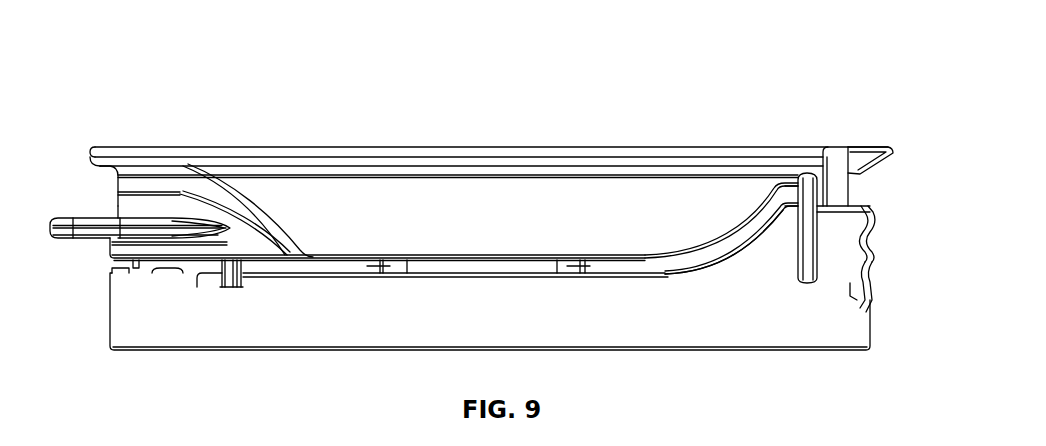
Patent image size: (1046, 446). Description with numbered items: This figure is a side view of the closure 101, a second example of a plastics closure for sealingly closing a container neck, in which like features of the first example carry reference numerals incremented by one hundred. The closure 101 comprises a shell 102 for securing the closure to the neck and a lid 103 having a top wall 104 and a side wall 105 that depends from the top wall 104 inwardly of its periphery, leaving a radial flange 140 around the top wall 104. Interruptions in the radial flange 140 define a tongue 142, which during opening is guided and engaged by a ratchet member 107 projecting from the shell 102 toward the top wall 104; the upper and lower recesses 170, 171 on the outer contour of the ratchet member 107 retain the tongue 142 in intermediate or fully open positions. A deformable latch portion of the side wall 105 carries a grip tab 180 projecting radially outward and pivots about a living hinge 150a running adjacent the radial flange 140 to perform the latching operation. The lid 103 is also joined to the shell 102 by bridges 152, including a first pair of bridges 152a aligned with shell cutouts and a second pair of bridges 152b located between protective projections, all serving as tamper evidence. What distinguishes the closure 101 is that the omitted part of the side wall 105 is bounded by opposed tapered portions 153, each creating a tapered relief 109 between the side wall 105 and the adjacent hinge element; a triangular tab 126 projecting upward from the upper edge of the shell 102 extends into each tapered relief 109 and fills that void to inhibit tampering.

The closure 101 is at (815, 84).
The shell 102 is at (513, 331).
The lid 103 is at (648, 137).
The top wall 104 is at (340, 147).
The side wall 105 is at (513, 231).
The ratchet member 107 is at (866, 199).
The tapered relief 109 is at (767, 212).
The triangular tab 126 is at (790, 247).
The radial flange 140 is at (98, 148).
The tongue 142 is at (878, 147).
The living hinge 150a is at (118, 178).
The bridges 152 is at (378, 258).
The first pair of bridges 152a is at (240, 279).
The second pair of bridges 152b is at (136, 272).
The tapered portion 153 is at (777, 205).
The upper recess 170 is at (868, 218).
The lower recess 171 is at (868, 265).
The grip tab 180 is at (53, 220).